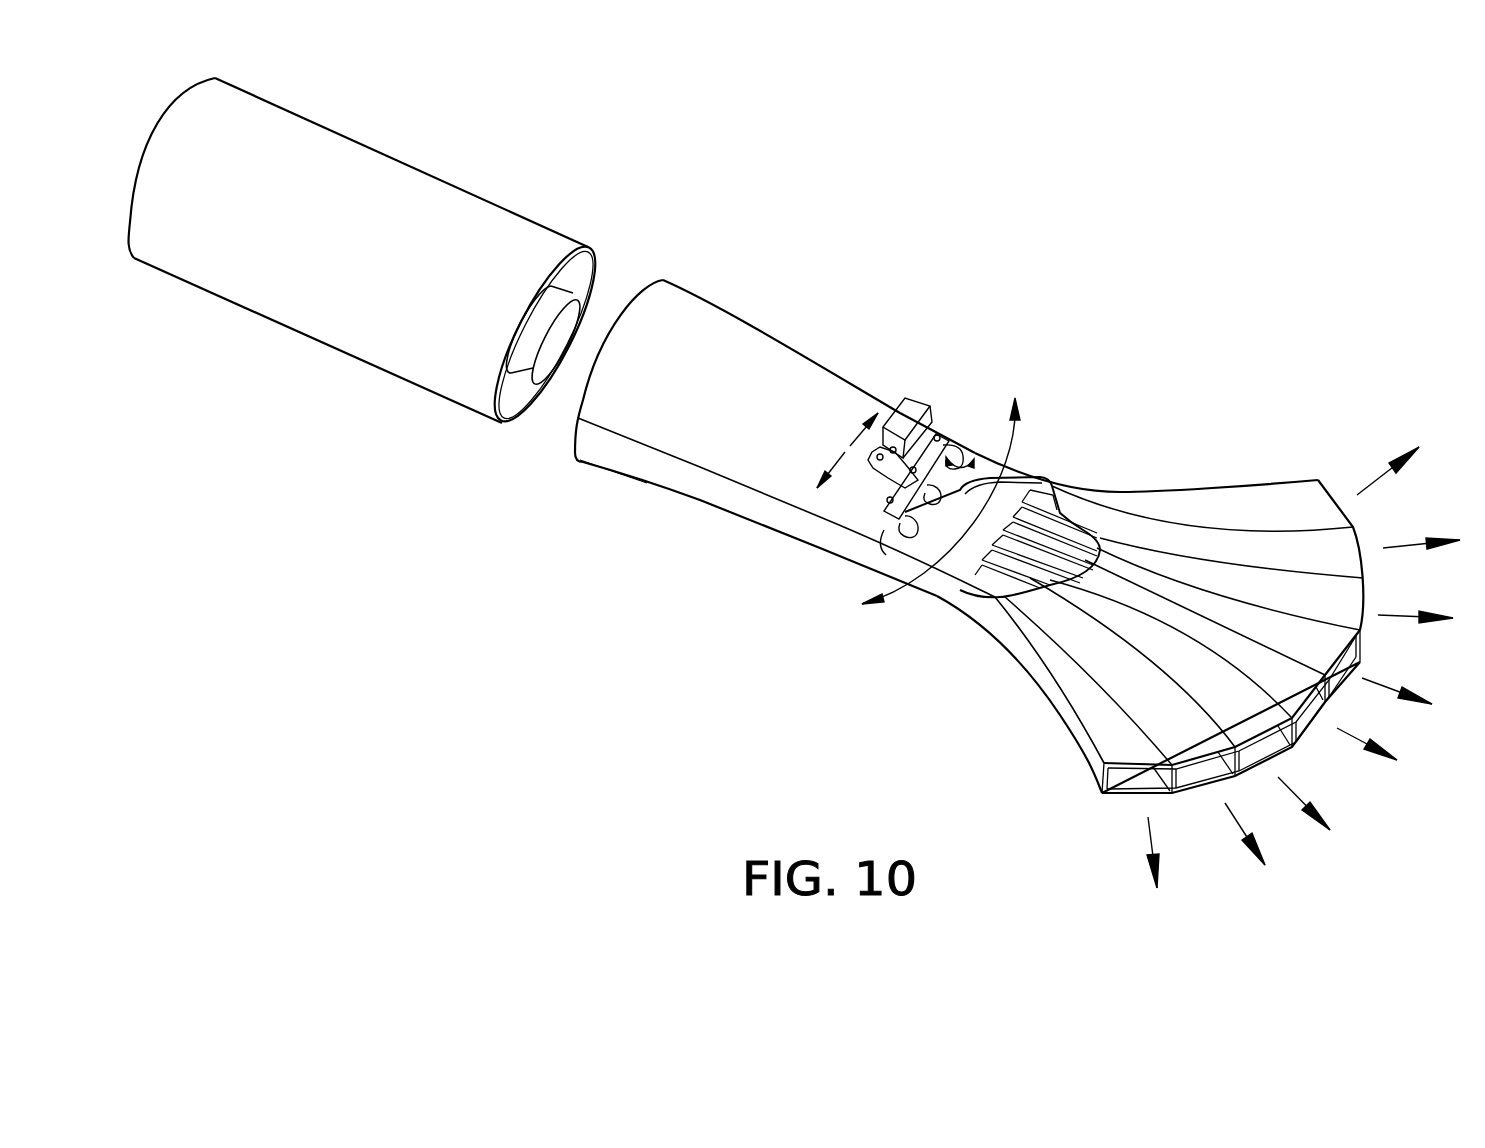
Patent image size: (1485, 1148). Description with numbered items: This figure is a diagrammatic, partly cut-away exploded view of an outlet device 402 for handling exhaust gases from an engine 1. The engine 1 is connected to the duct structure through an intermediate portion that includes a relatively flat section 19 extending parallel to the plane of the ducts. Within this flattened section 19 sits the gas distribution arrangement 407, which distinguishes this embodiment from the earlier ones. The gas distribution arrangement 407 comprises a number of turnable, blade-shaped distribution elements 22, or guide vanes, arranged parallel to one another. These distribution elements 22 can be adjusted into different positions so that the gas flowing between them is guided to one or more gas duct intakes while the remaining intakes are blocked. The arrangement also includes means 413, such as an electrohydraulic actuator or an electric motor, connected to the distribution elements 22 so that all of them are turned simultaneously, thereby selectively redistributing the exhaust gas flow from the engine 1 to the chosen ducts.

The engine 1 is at (377, 172).
The flat section 19 is at (802, 375).
The distribution elements 22 is at (1025, 490).
The outlet device 402 is at (943, 275).
The gas distribution arrangement 407 is at (953, 357).
The means for turning 413 is at (902, 400).